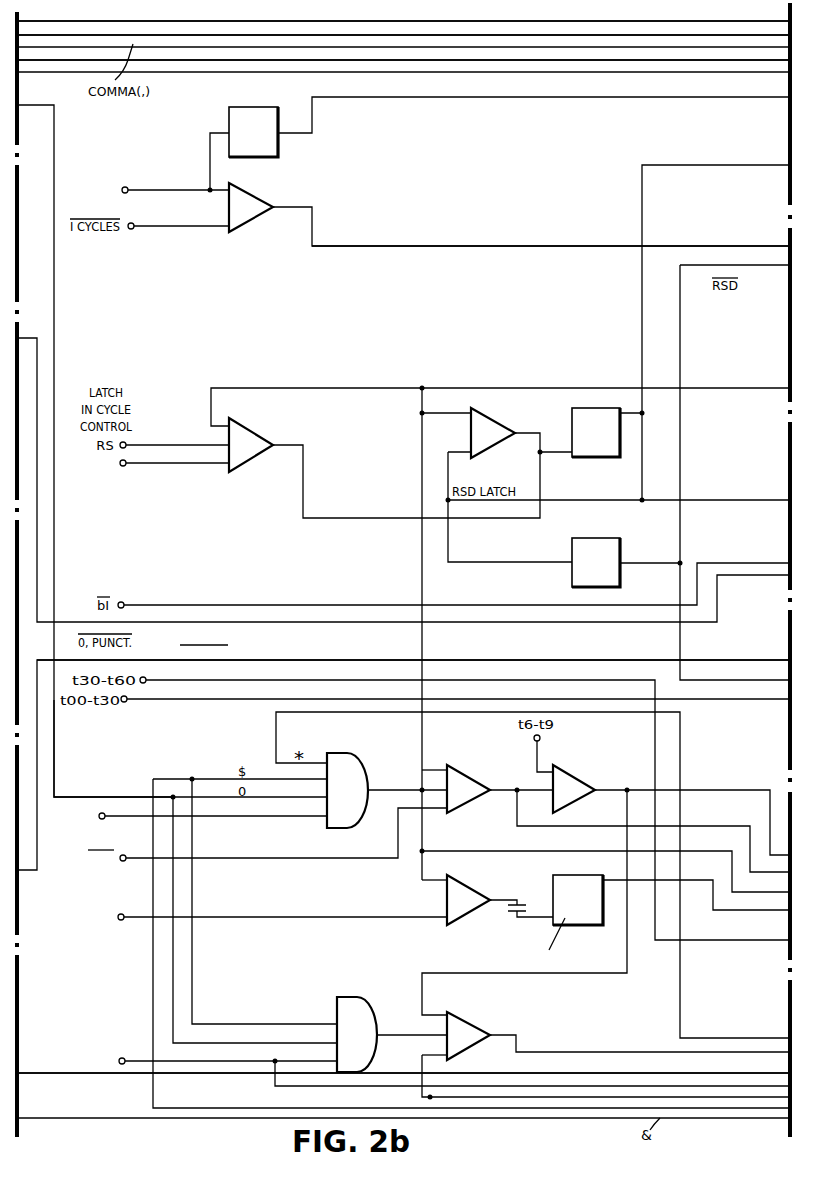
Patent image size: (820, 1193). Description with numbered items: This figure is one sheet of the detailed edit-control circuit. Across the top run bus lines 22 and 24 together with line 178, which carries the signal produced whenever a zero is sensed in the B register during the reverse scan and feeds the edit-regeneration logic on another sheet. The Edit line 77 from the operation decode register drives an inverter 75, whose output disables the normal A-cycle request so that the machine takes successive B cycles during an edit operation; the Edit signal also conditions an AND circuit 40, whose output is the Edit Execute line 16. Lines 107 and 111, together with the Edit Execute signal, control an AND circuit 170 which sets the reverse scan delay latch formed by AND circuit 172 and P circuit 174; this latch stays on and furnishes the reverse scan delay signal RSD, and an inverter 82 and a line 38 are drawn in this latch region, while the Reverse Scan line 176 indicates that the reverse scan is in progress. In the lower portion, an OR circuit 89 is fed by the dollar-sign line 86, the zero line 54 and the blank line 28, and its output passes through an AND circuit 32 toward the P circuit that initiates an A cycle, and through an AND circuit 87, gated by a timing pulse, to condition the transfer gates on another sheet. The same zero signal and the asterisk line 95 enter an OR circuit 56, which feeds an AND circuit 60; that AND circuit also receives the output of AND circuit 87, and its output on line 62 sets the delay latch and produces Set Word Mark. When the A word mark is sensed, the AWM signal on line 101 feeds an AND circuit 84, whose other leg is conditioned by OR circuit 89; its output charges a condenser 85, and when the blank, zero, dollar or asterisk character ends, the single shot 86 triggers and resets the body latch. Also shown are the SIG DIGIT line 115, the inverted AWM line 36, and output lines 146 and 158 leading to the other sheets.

The bus line 22 is at (495, 62).
The bus line 24 is at (654, 37).
The line 178 is at (743, 22).
The inverter 75 is at (229, 114).
The Edit line 77 is at (190, 190).
The AND gate 40 is at (255, 197).
The EDIT EXECUTE line 16 is at (508, 247).
The Reverse Scan line 176 is at (641, 309).
The line 38 is at (731, 394).
The AND circuit 170 is at (254, 432).
The line 111 is at (152, 446).
The line 107 is at (160, 463).
The reverse scan delay latch 172 is at (492, 425).
The reverse scan delay latch 174 is at (592, 458).
The inverter 82 is at (621, 556).
The SIG DIGIT line 115 is at (576, 667).
The line 54 is at (85, 798).
The single shot 86 is at (167, 778).
The OR circuit 89 is at (363, 767).
The line 28 is at (140, 818).
The AWM-bar line 36 is at (340, 860).
The AND circuit 32 is at (459, 779).
The AND circuit 87 is at (583, 779).
The AND circuit 84 is at (469, 894).
The condenser 85 is at (520, 903).
The line 101 is at (137, 919).
The OR circuit 56 is at (365, 1011).
The AND circuit 60 is at (468, 1054).
The line 62 is at (642, 1056).
The line 146 is at (638, 1080).
The line 95 is at (335, 1086).
The line 158 is at (428, 1097).